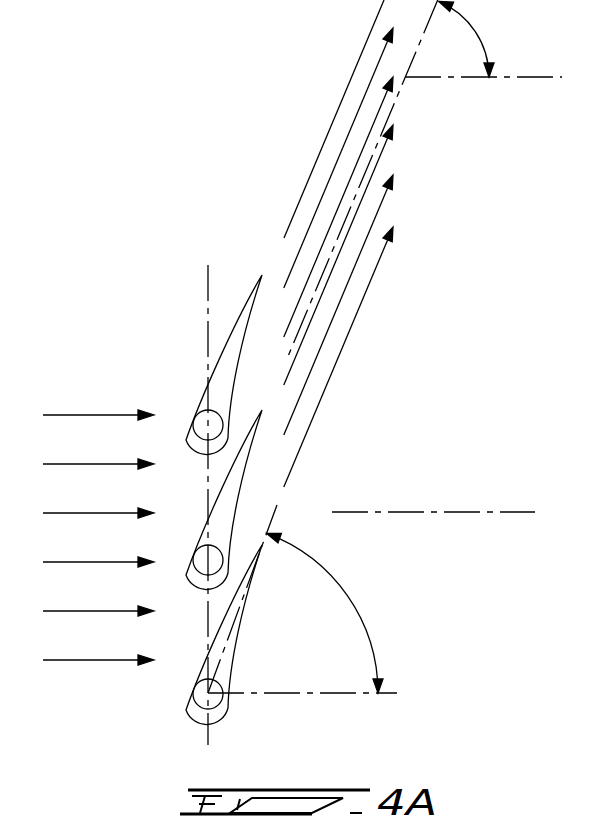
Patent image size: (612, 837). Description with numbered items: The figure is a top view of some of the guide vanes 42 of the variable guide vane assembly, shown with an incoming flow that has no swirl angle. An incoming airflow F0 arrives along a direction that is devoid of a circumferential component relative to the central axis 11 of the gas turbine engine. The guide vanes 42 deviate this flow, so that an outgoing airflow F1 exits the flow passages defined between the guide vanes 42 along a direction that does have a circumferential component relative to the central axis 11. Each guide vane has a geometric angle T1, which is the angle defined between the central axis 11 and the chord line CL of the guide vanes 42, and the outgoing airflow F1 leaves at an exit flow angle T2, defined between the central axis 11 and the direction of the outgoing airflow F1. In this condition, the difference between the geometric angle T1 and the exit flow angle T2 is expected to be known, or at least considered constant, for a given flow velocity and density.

The guide vanes 42 is at (241, 317).
The central axis 11 is at (461, 511).
The incoming airflow F0 is at (87, 414).
The outgoing airflow F1 is at (355, 322).
The geometric angle T1 is at (302, 613).
The exit flow angle T2 is at (424, 179).
The chord line CL is at (227, 648).